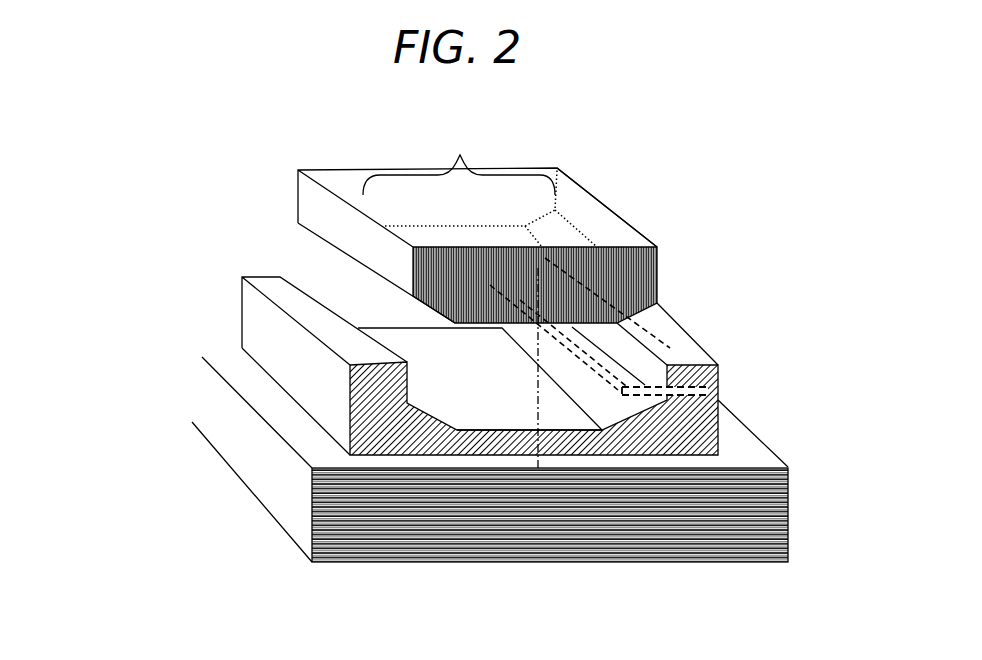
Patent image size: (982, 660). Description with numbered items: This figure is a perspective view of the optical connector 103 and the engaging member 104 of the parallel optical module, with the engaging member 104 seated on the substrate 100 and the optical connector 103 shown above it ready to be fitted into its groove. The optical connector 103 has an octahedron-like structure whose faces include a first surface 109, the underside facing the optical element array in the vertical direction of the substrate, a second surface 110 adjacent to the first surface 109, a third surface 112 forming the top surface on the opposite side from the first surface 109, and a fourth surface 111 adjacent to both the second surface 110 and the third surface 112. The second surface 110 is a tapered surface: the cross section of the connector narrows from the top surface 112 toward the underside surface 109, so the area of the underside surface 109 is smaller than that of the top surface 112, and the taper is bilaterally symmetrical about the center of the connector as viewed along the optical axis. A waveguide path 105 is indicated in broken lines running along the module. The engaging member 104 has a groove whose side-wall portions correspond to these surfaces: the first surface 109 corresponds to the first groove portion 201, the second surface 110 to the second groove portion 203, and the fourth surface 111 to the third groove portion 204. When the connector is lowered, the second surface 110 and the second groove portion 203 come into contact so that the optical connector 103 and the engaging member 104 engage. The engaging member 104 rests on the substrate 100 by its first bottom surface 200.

The substrate 100 is at (297, 487).
The optical connector 103 is at (292, 171).
The engaging member 104 is at (253, 328).
The optical waveguide core 105 is at (650, 372).
The first surface 109 is at (428, 239).
The second surface 110 is at (550, 227).
The fourth surface 111 is at (610, 228).
The third surface 112 is at (459, 165).
The first bottom surface 200 is at (528, 457).
The first groove portion 201 is at (427, 350).
The second groove portion 203 is at (580, 372).
The third groove portion 204 is at (655, 372).